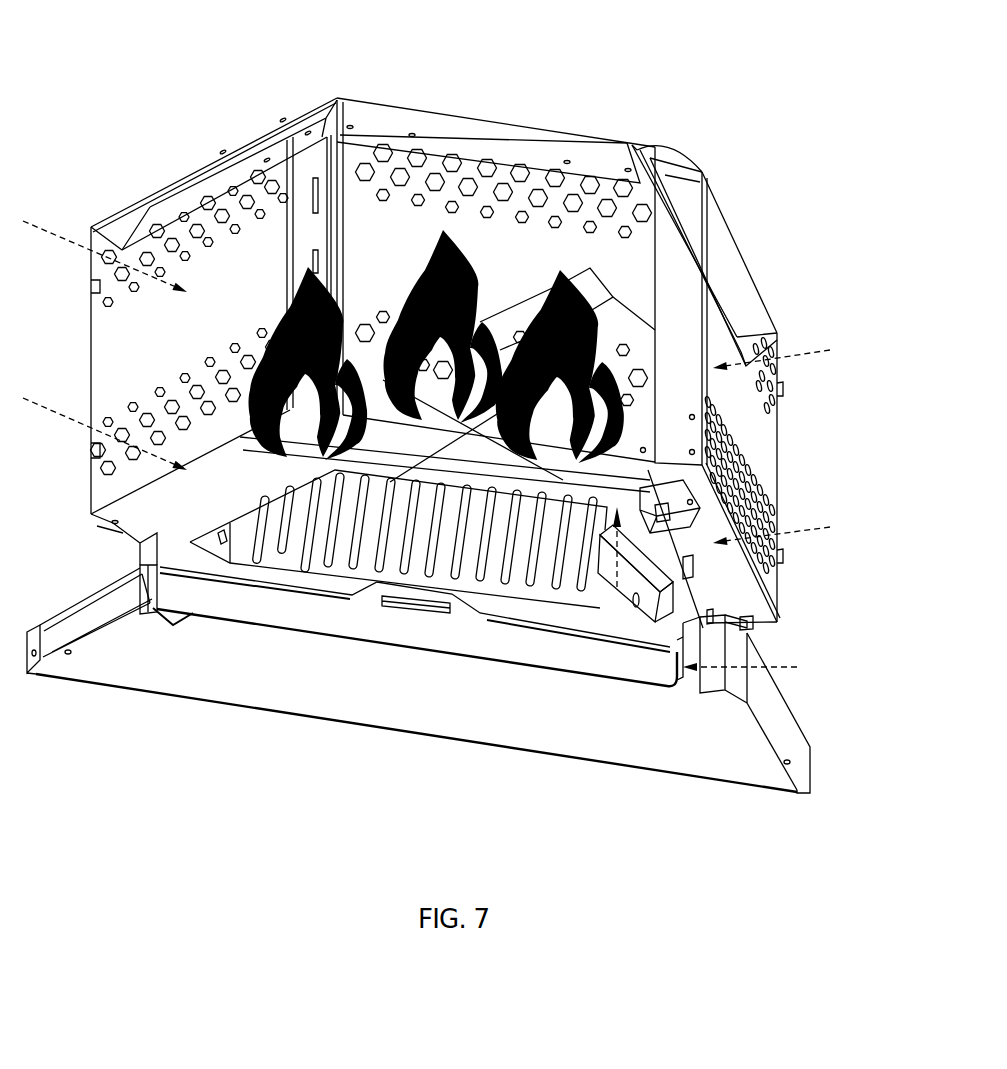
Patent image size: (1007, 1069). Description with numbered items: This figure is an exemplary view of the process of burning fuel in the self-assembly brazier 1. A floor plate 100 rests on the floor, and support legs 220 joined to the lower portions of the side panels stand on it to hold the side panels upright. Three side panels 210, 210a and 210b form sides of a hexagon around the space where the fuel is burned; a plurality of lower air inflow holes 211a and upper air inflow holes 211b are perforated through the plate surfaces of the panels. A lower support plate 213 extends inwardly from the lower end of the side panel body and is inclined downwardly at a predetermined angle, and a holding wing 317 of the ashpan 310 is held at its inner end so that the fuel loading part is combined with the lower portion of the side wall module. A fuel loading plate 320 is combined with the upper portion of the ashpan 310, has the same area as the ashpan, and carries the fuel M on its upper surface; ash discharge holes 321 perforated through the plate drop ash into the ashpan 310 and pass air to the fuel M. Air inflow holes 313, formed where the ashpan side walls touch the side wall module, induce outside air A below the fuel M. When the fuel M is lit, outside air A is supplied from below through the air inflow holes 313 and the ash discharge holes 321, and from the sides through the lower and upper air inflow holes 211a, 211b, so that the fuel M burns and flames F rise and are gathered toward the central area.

The self-assembly brazier 1 is at (125, 107).
The floor plate 100 is at (577, 713).
The side panel 210 is at (763, 441).
The side panel 210a is at (527, 250).
The side panel 210b is at (123, 327).
The lower air inflow hole 211a is at (777, 557).
The upper air inflow hole 211b is at (777, 390).
The lower support plate 213 is at (753, 613).
The support leg 220 is at (740, 693).
The ashpan 310 is at (350, 623).
The air inflow hole 313 is at (668, 657).
The holding wing 317 is at (713, 650).
The fuel loading plate 320 is at (513, 603).
The ash discharge hole 321 is at (428, 592).
The flame F is at (452, 237).
The fuel M is at (670, 307).
The outside air A is at (427, 439).